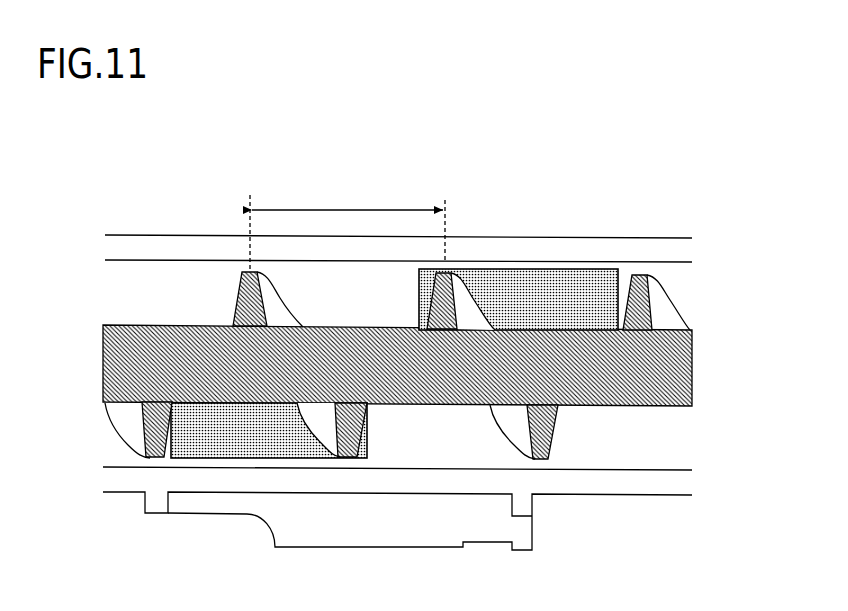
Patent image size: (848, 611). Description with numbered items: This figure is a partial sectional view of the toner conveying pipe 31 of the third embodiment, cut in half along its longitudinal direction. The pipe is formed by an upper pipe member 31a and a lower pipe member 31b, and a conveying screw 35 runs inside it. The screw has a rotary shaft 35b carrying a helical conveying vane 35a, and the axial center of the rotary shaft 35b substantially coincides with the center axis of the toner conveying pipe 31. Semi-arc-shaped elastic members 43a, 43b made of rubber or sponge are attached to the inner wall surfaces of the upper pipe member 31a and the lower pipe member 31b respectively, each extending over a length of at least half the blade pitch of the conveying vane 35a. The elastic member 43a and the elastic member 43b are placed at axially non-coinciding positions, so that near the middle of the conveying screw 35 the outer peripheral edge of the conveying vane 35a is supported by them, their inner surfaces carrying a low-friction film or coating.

The toner conveying pipe 31 is at (179, 204).
The upper pipe member 31a is at (640, 248).
The lower pipe member 31b is at (610, 485).
The conveying screw 35 is at (765, 292).
The conveying vane 35a is at (656, 293).
The rotary shaft 35b is at (668, 352).
The elastic member 43a is at (548, 290).
The elastic member 43b is at (248, 443).